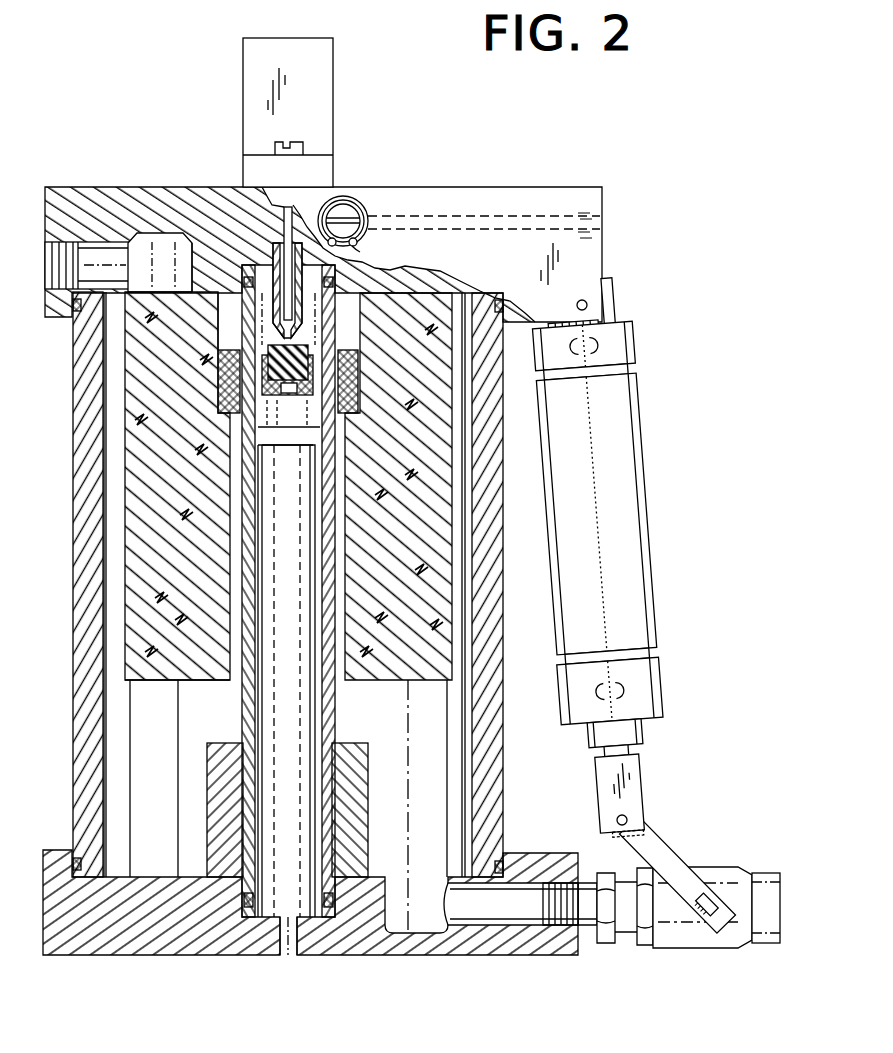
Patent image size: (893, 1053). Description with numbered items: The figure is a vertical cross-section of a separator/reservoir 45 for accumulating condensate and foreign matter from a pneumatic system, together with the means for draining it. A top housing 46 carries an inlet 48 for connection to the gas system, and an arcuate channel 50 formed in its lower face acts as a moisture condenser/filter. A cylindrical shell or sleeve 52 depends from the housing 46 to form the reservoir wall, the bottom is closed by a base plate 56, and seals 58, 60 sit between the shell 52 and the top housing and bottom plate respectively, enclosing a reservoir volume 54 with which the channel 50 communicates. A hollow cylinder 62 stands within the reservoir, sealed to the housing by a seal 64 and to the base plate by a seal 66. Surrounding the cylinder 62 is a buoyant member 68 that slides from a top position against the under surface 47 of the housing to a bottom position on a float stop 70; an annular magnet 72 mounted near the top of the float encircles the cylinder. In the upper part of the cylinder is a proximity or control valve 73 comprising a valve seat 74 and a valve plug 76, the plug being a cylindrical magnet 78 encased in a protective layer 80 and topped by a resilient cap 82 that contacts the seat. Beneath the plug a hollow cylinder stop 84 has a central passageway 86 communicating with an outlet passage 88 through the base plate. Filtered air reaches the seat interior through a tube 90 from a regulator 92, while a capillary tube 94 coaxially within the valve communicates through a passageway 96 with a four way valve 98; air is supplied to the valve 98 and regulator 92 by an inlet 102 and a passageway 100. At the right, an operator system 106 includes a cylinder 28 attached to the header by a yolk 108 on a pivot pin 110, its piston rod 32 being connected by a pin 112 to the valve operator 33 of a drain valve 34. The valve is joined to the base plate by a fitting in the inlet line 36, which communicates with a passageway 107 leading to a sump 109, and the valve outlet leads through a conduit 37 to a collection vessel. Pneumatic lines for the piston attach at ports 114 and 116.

The separator/reservoir 45 is at (47, 150).
The top housing 46 is at (103, 187).
The under surface 47 is at (195, 240).
The inlet 48 is at (58, 240).
The arcuate channel 50 is at (155, 232).
The cylindrical shell or sleeve 52 is at (108, 380).
The reservoir volume 54 is at (122, 446).
The base plate 56 is at (146, 877).
The seal 58 is at (85, 302).
The seal 60 is at (515, 862).
The hollow cylinder 62 is at (243, 700).
The seal 64 is at (335, 285).
The seal 66 is at (345, 925).
The buoyant member 68 is at (166, 684).
The float stop 70 is at (370, 790).
The annular magnet 72 is at (218, 384).
The proximity or control valve 73 is at (300, 340).
The valve seat 74 is at (308, 330).
The valve plug 76 is at (296, 405).
The cylindrical magnet 78 is at (262, 412).
The protective layer 80 is at (315, 447).
The resilient cap or plug 82 is at (225, 345).
The hollow cylinder stop 84 is at (305, 497).
The central passageway 86 is at (300, 568).
The outlet passage 88 is at (298, 930).
The tube 90 is at (358, 246).
The regulator 92 is at (358, 196).
The capillary tube 94 is at (275, 205).
The passageway 96 is at (288, 205).
The four way valve 98 is at (333, 88).
The passageway 100 is at (445, 214).
The inlet 102 is at (605, 215).
The operator system 106 is at (722, 494).
The passageway 107 is at (560, 870).
The yolk 108 is at (616, 305).
The sump 109 is at (425, 880).
The pivot pin 110 is at (587, 302).
The pin 112 is at (627, 818).
The port 114 is at (592, 346).
The port 116 is at (612, 690).
The cylinder 28 is at (645, 452).
The piston rod 32 is at (642, 782).
The valve operator 33 is at (676, 852).
The drain valve 34 is at (715, 868).
The inlet line 36 is at (632, 876).
The conduit 37 is at (766, 873).